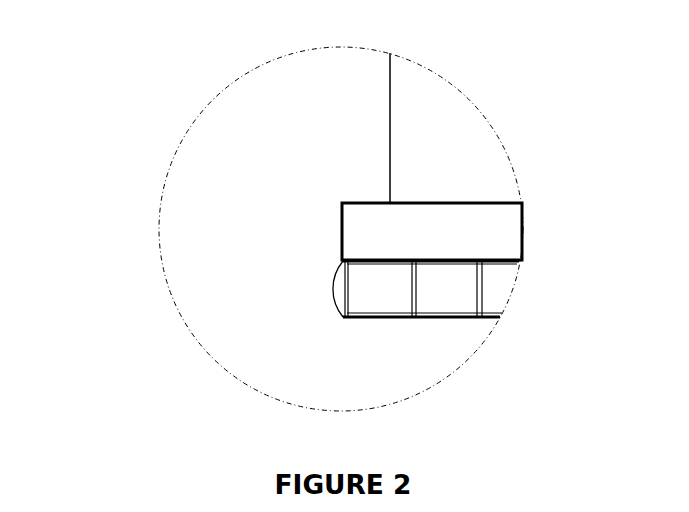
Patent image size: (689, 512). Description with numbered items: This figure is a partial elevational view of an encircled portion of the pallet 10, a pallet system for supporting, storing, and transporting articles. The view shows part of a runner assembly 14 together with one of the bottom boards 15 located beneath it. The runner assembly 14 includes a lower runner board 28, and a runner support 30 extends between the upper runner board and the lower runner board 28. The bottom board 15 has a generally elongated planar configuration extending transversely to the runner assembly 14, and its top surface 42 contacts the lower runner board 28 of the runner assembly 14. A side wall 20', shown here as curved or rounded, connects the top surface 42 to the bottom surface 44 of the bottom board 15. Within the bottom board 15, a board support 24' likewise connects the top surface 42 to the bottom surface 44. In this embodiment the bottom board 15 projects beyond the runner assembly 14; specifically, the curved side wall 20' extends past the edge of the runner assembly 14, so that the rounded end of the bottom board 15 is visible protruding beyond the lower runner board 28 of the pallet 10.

The pallet 10 is at (296, 213).
The runner assembly 14 is at (541, 171).
The bottom board 15 is at (527, 316).
The side wall 20' is at (257, 348).
The board support 24' is at (562, 284).
The lower runner board 28 is at (363, 232).
The runner support 30 is at (415, 121).
The top surface 42 is at (389, 262).
The bottom surface 44 is at (390, 318).